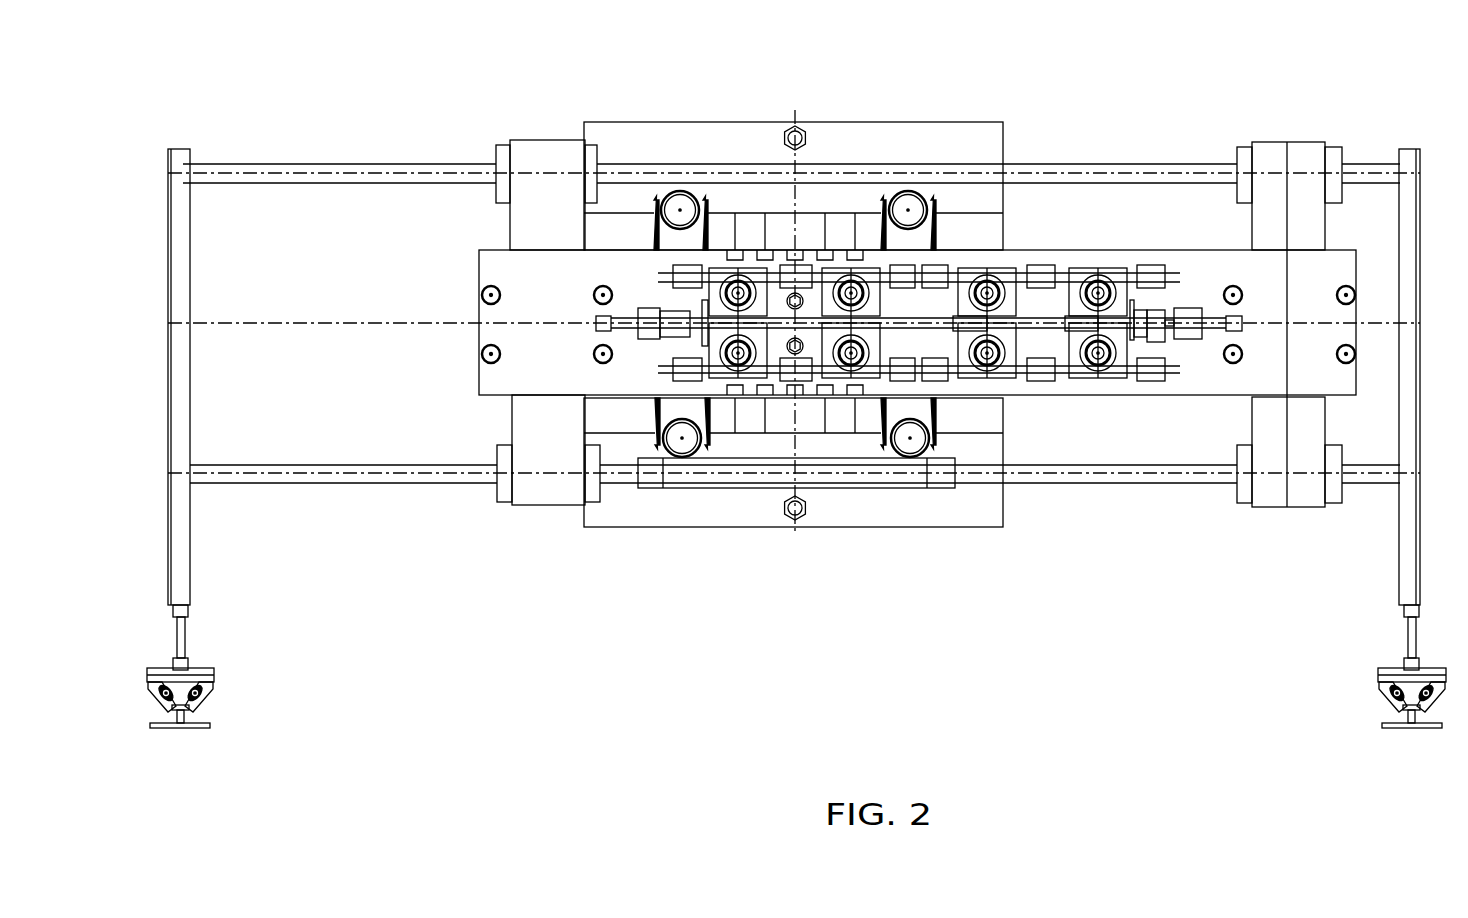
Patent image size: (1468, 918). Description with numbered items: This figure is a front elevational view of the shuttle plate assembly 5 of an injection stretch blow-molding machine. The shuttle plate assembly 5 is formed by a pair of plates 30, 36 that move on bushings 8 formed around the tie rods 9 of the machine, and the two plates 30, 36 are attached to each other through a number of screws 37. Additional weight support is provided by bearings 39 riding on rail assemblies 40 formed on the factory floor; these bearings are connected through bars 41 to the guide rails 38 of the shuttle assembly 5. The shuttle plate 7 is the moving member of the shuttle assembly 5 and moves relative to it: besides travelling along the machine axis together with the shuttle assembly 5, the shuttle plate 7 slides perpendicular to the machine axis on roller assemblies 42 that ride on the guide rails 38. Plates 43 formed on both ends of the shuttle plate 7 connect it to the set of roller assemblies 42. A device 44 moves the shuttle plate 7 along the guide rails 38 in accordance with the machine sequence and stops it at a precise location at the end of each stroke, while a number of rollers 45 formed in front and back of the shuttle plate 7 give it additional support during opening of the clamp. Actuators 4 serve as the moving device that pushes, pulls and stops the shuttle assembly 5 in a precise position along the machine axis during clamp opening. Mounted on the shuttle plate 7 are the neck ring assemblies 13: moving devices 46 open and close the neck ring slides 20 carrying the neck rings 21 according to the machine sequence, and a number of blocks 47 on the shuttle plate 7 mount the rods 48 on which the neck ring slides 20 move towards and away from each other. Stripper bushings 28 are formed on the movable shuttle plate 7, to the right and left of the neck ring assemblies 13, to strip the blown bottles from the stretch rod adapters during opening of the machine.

The actuators 4 is at (800, 128).
The shuttle plate assembly 5 is at (1260, 258).
The shuttle plate 7 is at (1350, 262).
The bushings 8 is at (909, 202).
The tie rods 9 is at (917, 192).
The neck ring assembly 13 is at (708, 268).
The neck ring slides 20 is at (1003, 272).
The neck rings 21 is at (734, 277).
The stripper bushings 28 is at (489, 360).
The plate 30 is at (717, 138).
The plate 36 is at (750, 218).
The screws 37 is at (881, 210).
The guide rails 38 is at (1155, 168).
The bearings 39 is at (213, 671).
The rail assemblies 40 is at (190, 707).
The bars 41 is at (185, 557).
The roller assemblies 42 is at (500, 502).
The plates 43 is at (1270, 487).
The device 44 is at (865, 478).
The rollers 45 is at (771, 213).
The moving devices 46 is at (1198, 312).
The blocks 47 is at (1153, 378).
The rods 48 is at (1065, 375).